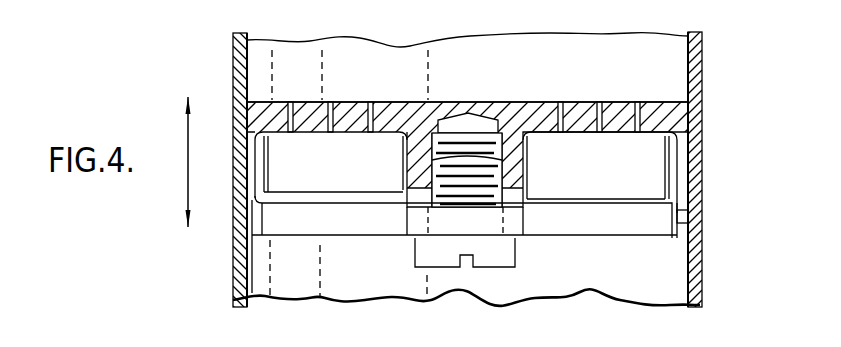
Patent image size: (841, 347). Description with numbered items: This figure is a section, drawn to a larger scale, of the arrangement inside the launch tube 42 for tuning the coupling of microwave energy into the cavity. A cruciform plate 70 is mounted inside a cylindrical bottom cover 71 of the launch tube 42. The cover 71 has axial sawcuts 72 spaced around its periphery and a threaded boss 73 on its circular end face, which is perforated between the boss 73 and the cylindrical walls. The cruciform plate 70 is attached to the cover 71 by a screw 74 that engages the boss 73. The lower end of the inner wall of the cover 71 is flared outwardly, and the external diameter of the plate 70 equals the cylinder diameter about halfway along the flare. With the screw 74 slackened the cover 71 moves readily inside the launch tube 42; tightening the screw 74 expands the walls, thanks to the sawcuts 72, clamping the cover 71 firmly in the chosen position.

The launch tube 42 is at (687, 258).
The cruciform plate 70 is at (313, 218).
The cylindrical bottom cover 71 is at (683, 108).
The axial sawcuts 72 is at (395, 170).
The threaded boss 73 is at (512, 128).
The screw 74 is at (497, 255).